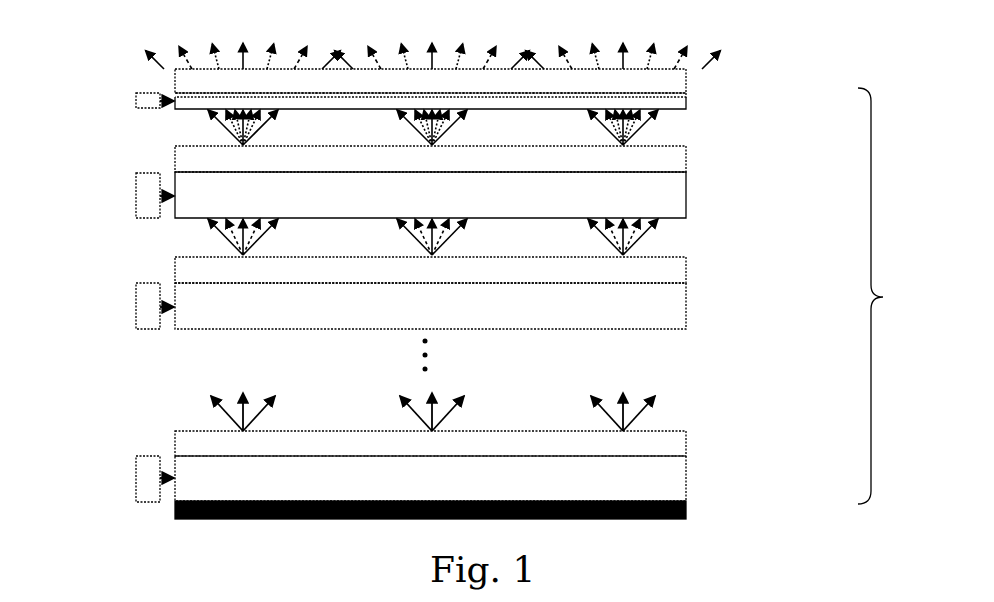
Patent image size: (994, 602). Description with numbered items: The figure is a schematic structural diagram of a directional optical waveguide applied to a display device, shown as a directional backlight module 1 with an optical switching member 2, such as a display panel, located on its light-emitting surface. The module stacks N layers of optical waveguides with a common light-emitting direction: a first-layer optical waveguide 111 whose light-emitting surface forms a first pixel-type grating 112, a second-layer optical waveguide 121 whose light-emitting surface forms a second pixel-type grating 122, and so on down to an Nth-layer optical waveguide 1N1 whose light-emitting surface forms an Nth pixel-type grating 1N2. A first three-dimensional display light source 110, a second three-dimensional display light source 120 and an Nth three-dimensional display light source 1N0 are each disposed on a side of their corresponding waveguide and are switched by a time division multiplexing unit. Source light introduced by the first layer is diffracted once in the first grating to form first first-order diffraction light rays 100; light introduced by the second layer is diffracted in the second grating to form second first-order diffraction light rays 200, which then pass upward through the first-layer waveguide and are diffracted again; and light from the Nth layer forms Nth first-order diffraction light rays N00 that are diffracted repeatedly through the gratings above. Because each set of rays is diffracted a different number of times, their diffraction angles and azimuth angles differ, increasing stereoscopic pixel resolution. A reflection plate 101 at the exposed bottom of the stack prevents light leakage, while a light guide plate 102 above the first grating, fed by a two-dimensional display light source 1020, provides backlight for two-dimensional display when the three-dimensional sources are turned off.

The directional backlight module 1 is at (882, 296).
The optical switching member 2 is at (686, 85).
The light guide plate 102 is at (686, 105).
The two-dimensional display light source 1020 is at (138, 104).
The first first-order diffraction light rays 100 is at (655, 125).
The first three-dimensional display light source 110 is at (140, 198).
The first-layer optical waveguide 111 is at (686, 196).
The first pixel-type grating 112 is at (686, 158).
The second first-order diffraction light rays 200 is at (655, 228).
The second three-dimensional display light source 120 is at (140, 310).
The second-layer optical waveguide 121 is at (686, 310).
The second pixel-type grating 122 is at (686, 265).
The Nth first-order diffraction light rays N00 is at (655, 392).
The Nth three-dimensional display light source 1N0 is at (140, 480).
The Nth-layer optical waveguide 1N1 is at (686, 478).
The Nth pixel-type grating 1N2 is at (686, 440).
The reflection plate 101 is at (686, 507).